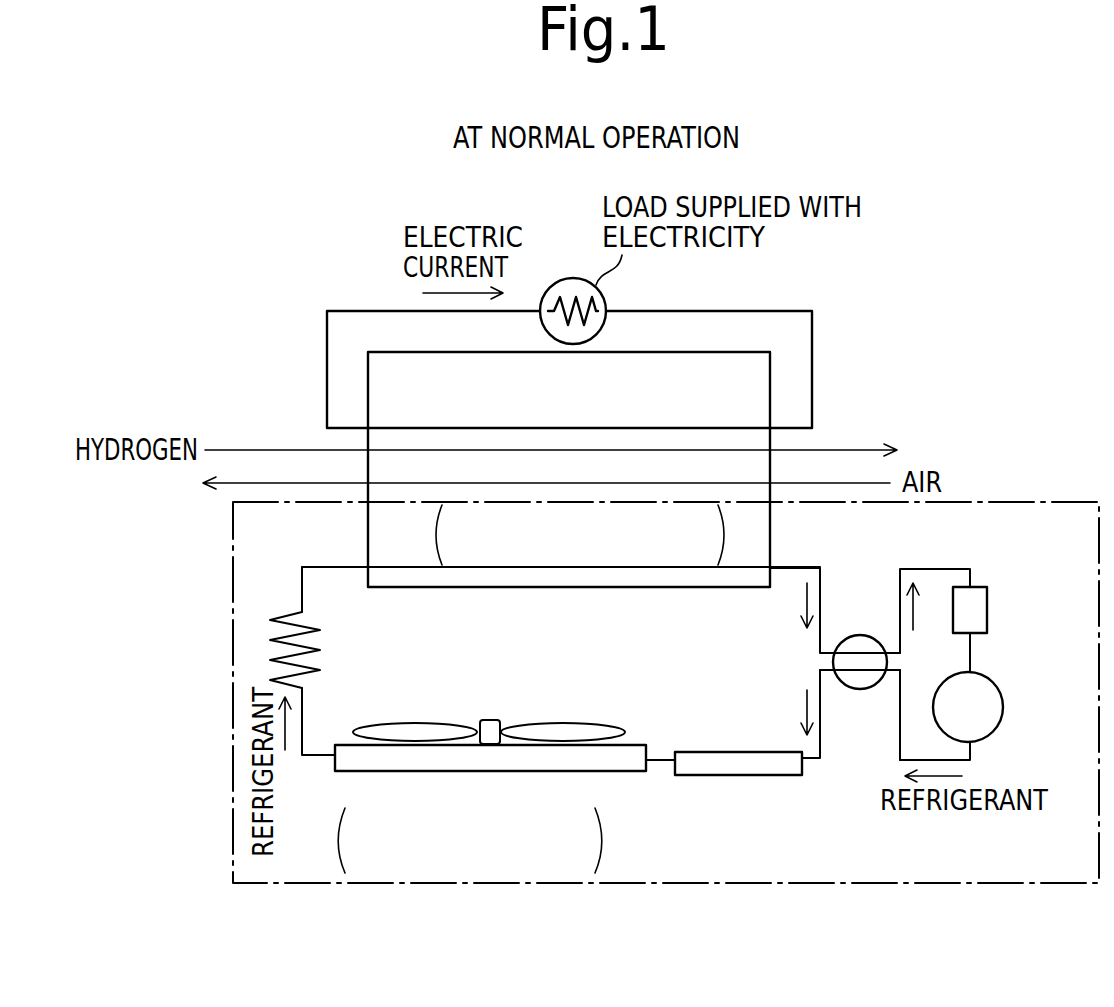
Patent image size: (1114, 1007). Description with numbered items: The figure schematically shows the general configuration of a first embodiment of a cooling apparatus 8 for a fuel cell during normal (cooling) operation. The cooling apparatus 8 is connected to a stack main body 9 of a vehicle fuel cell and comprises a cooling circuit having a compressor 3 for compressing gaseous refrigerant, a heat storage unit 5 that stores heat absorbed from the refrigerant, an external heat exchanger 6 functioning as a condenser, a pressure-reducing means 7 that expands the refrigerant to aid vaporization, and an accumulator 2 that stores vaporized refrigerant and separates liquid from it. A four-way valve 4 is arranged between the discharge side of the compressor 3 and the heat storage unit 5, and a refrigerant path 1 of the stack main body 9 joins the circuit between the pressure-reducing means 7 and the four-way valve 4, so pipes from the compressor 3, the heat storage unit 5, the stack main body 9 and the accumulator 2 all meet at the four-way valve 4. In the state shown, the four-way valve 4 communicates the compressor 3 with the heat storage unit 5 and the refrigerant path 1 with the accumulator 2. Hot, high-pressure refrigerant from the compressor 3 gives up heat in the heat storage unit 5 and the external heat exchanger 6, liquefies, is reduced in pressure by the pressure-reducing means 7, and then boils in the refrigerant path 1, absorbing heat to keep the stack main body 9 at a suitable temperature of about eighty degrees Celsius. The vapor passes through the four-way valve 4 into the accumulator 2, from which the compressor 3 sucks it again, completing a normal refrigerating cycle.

The refrigerant path 1 is at (437, 567).
The accumulator 2 is at (987, 600).
The compressor 3 is at (1003, 705).
The four-way valve 4 is at (858, 690).
The heat storage unit 5 is at (731, 775).
The external heat exchanger 6 is at (447, 771).
The pressure-reducing means 7 is at (315, 641).
The cooling apparatus 8 is at (1023, 482).
The stack main body 9 is at (697, 387).